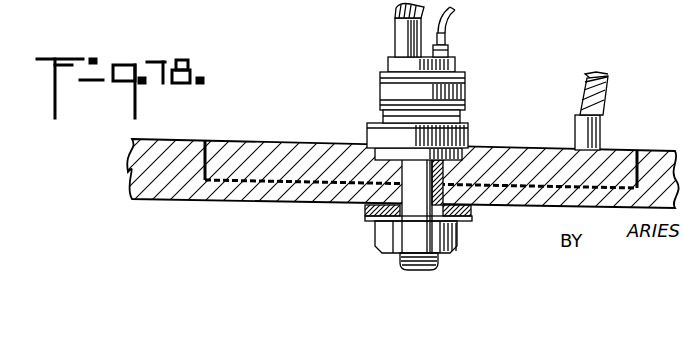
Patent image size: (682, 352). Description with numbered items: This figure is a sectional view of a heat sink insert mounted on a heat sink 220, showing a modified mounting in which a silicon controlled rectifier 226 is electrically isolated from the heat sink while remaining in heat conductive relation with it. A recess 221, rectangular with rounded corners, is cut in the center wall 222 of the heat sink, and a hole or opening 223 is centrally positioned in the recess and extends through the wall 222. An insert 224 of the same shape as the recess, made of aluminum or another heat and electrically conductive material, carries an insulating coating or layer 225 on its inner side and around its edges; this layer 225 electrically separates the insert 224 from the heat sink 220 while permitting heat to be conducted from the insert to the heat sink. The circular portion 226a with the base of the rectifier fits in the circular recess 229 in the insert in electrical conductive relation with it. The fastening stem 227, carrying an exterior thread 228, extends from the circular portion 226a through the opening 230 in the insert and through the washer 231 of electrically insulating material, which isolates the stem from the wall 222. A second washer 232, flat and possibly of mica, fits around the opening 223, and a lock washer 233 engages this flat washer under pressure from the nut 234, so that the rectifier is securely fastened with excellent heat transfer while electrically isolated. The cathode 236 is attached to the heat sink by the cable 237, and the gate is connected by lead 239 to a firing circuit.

The heat sink 220 is at (203, 214).
The recess 221 is at (200, 150).
The center wall 222 is at (150, 188).
The hole or opening 223 is at (362, 210).
The insert 224 is at (612, 158).
The insulating coating or layer 225 is at (236, 178).
The silicon controlled rectifier 226 is at (462, 79).
The circular portion 226a is at (473, 136).
The fastening stem 227 is at (410, 218).
The exterior thread 228 is at (437, 254).
The circular recess 229 is at (352, 141).
The opening 230 is at (364, 207).
The washer 231 is at (490, 158).
The second washer 232 is at (472, 209).
The lock washer 233 is at (461, 225).
The nut 234 is at (413, 243).
The cathode 236 is at (395, 40).
The cable 237 is at (396, 7).
The lead 239 is at (452, 28).